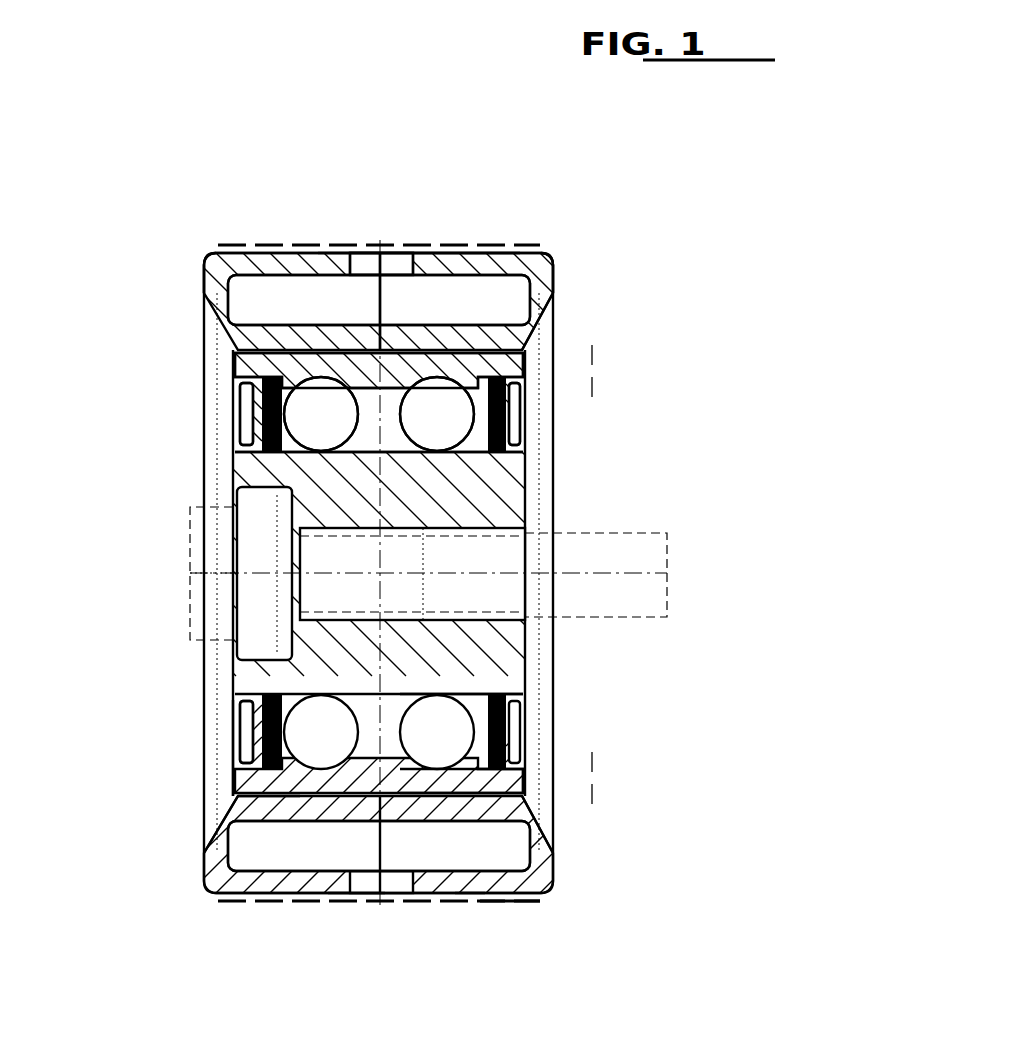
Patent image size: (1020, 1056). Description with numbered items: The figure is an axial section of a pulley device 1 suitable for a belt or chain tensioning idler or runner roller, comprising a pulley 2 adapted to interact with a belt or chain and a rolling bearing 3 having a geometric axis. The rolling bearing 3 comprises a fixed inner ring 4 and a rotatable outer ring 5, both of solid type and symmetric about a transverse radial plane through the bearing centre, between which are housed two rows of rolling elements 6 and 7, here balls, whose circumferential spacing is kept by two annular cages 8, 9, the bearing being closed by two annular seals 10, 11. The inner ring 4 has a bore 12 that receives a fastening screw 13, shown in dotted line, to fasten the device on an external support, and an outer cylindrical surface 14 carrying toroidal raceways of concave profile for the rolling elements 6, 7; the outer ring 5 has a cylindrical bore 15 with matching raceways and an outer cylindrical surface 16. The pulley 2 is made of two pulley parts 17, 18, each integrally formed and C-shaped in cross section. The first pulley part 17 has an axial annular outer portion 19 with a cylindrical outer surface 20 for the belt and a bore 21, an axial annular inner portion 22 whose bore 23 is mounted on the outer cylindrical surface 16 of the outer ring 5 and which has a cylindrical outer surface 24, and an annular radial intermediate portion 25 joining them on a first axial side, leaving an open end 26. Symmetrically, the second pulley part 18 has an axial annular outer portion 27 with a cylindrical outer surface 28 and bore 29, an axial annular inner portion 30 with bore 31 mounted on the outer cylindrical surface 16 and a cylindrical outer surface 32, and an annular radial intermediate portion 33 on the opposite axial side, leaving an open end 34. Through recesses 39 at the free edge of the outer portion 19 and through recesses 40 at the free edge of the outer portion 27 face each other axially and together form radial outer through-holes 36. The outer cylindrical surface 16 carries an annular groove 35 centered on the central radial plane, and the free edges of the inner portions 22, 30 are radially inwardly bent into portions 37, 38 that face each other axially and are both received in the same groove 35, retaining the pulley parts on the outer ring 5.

The pulley device 1 is at (175, 228).
The pulley 2 is at (541, 248).
The rolling bearing 3 is at (544, 400).
The inner ring 4 is at (548, 634).
The outer ring 5 is at (548, 350).
The rolling elements 6 is at (293, 423).
The rolling elements 7 is at (428, 423).
The annular cage 8 is at (262, 410).
The annular cage 9 is at (548, 735).
The annular seal 10 is at (205, 762).
The annular seal 11 is at (548, 445).
The bore 12 is at (250, 567).
The fastening screw 13 is at (667, 572).
The outer cylindrical surface 14 is at (330, 430).
The cylindrical bore 15 is at (250, 718).
The outer cylindrical surface 16 is at (245, 855).
The first pulley part 17 is at (258, 247).
The second pulley part 18 is at (500, 247).
The axial annular outer portion 19 is at (328, 247).
The cylindrical outer surface 20 is at (265, 900).
The cylindrical inner surface 21 is at (300, 855).
The axial annular inner portion 22 is at (300, 247).
The cylindrical inner surface 23 is at (240, 365).
The cylindrical outer surface 24 is at (250, 298).
The annular radial intermediate portion 25 is at (205, 275).
The open end 26 is at (250, 392).
The axial annular outer portion 27 is at (463, 247).
The cylindrical outer surface 28 is at (520, 905).
The cylindrical inner surface 29 is at (477, 857).
The axial annular inner portion 30 is at (430, 247).
The cylindrical inner surface 31 is at (520, 760).
The cylindrical outer surface 32 is at (553, 833).
The annular radial intermediate portion 33 is at (548, 290).
The open end 34 is at (360, 895).
The annular groove 35 is at (520, 685).
The outer through-hole 36 is at (455, 70).
The bent portion 37 is at (343, 895).
The bent portion 38 is at (470, 895).
The through recess 39 is at (372, 247).
The through recess 40 is at (398, 247).